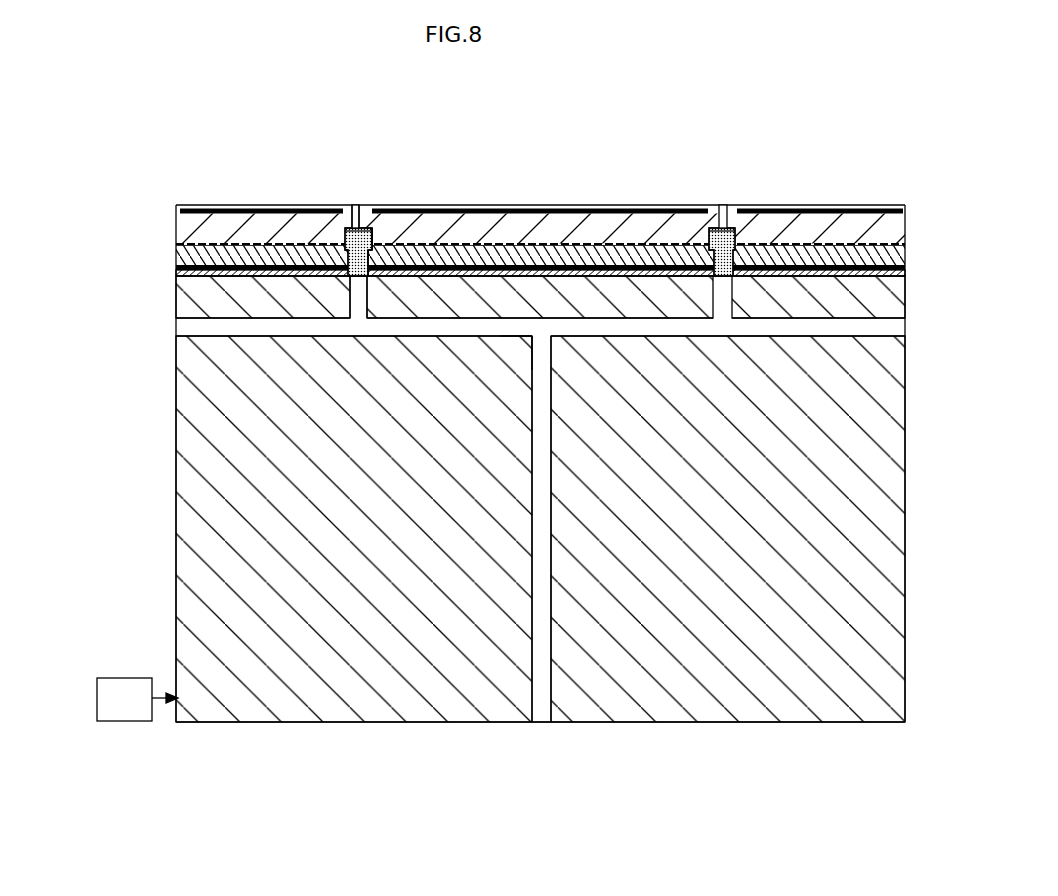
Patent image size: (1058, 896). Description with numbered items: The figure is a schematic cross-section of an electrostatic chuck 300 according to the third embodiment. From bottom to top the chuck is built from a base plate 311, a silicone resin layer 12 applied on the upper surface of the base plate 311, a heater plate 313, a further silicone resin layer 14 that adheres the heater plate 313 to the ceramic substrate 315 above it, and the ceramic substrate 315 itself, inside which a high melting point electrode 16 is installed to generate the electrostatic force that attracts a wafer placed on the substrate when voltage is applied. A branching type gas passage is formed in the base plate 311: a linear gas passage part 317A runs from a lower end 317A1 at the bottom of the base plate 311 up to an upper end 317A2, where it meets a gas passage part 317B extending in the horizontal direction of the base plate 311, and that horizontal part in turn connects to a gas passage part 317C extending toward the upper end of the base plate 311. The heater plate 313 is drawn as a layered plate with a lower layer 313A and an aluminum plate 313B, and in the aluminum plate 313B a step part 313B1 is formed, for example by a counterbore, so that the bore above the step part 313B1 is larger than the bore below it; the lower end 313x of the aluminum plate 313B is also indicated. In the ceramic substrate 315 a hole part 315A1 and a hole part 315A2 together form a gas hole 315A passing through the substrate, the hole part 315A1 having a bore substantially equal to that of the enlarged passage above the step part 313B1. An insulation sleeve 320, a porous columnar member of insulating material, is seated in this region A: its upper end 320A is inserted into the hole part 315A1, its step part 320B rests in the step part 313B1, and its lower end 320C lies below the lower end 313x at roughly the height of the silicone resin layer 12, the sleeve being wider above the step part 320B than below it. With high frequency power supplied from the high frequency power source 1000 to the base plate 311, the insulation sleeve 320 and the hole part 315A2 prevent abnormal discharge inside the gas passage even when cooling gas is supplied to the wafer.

The electrostatic chuck 300 is at (843, 182).
The silicone resin layer 12 is at (176, 294).
The base plate 311 is at (176, 600).
The gas passage part 317A is at (540, 490).
The lower end 317A1 is at (541, 722).
The upper end 317A2 is at (530, 340).
The gas passage part 317B is at (415, 323).
The gas passage part 317C is at (352, 293).
The ceramic substrate 315 is at (176, 207).
The gas hole 315A is at (523, 158).
The hole part 315A1 is at (392, 252).
The hole part 315A2 is at (385, 242).
The electrode 16 is at (249, 211).
The silicone resin layer 14 is at (176, 230).
The heater plate 313 is at (90, 250).
The first wiring film 313A is at (176, 272).
The aluminum plate 313B is at (176, 255).
The step part 313B1 is at (345, 256).
The lower end 313x is at (735, 276).
The insulation sleeve 320 is at (615, 132).
The upper end 320A is at (376, 233).
The step part 320B is at (376, 242).
The lower end 320C is at (374, 250).
The region A is at (350, 212).
The high frequency power source 1000 is at (124, 722).